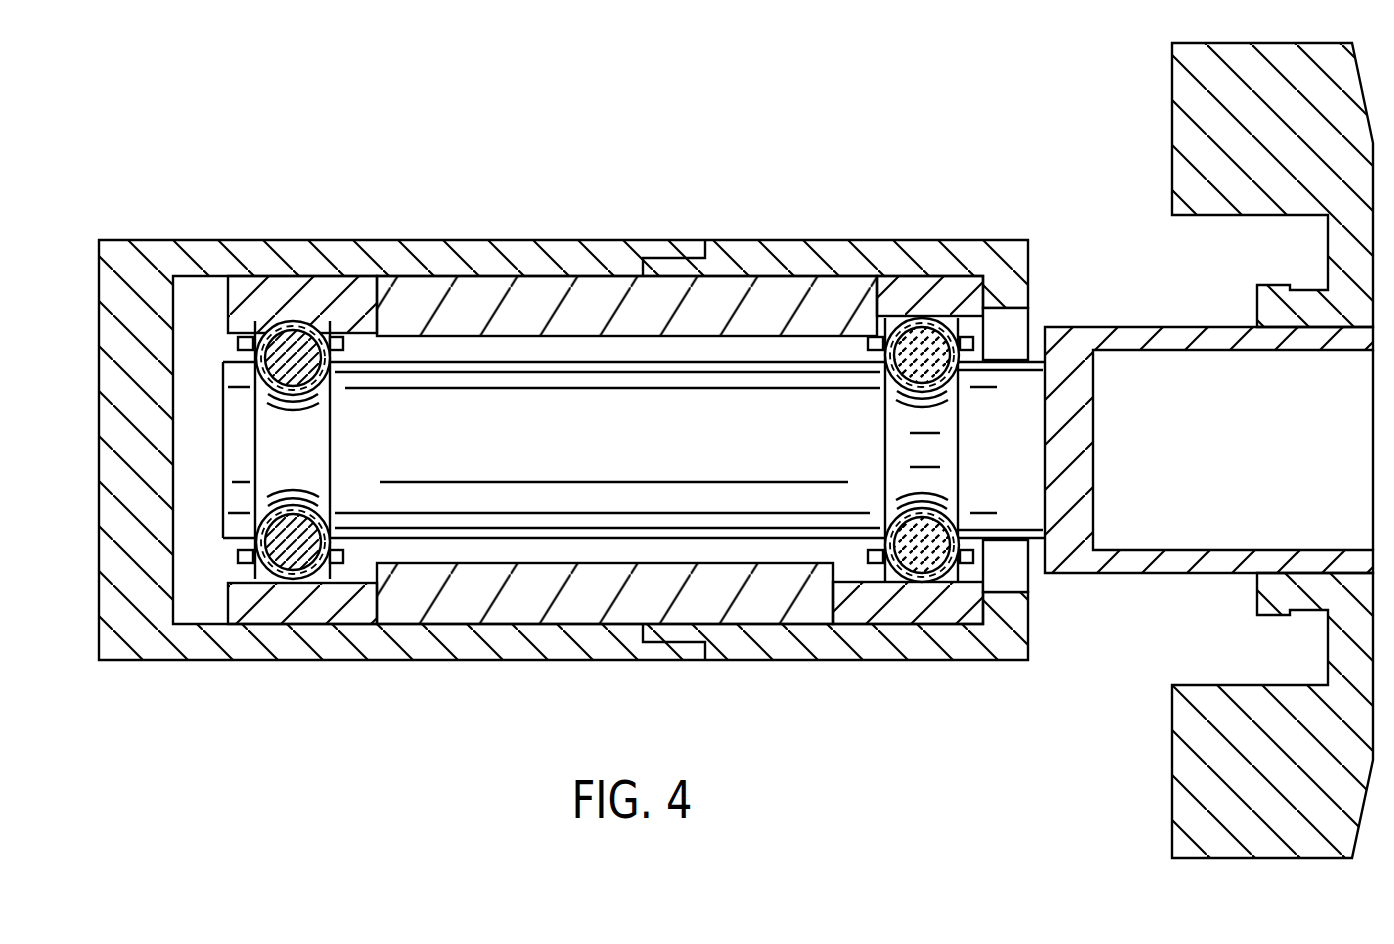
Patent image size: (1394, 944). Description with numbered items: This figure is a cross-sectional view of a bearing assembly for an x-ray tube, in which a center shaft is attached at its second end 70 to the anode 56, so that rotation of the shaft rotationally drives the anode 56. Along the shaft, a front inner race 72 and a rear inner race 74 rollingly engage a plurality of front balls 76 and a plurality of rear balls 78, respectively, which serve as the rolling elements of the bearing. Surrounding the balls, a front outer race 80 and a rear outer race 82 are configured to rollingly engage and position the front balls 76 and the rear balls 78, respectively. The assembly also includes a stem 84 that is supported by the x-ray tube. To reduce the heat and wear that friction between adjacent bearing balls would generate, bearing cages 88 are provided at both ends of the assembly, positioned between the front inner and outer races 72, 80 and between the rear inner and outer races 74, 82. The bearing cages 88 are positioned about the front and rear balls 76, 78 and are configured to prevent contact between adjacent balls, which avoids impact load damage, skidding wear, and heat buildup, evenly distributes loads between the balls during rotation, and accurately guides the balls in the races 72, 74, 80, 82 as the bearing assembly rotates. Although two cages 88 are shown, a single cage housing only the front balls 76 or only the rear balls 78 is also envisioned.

The anode 56 is at (1172, 132).
The second end 70 is at (1000, 385).
The front inner race 72 is at (925, 508).
The rear inner race 74 is at (295, 505).
The front balls 76 is at (910, 320).
The rear balls 78 is at (290, 320).
The front outer race 80 is at (988, 612).
The rear outer race 82 is at (223, 603).
The stem 84 is at (383, 240).
The bearing cage 88 is at (355, 563).